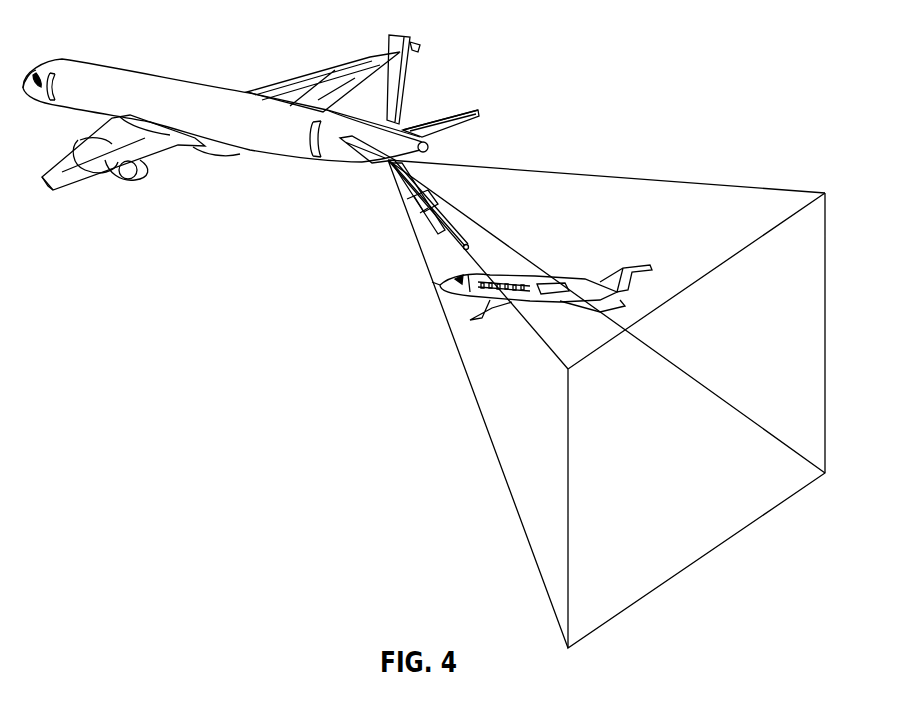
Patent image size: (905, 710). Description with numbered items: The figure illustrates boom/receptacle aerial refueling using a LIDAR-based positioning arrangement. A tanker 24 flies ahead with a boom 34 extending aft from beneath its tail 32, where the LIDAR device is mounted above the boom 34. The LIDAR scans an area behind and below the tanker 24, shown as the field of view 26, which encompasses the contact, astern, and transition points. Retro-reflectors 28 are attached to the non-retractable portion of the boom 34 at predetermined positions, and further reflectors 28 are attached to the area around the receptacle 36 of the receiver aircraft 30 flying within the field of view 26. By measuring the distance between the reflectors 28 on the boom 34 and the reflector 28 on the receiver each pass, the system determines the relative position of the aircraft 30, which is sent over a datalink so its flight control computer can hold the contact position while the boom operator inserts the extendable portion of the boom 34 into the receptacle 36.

The tanker 24 is at (200, 158).
The field of view 26 is at (689, 489).
The reflectors 28 is at (407, 198).
The aircraft 30 is at (577, 278).
The tail 32 is at (472, 99).
The boom 34 is at (398, 183).
The receptacle 36 is at (440, 283).